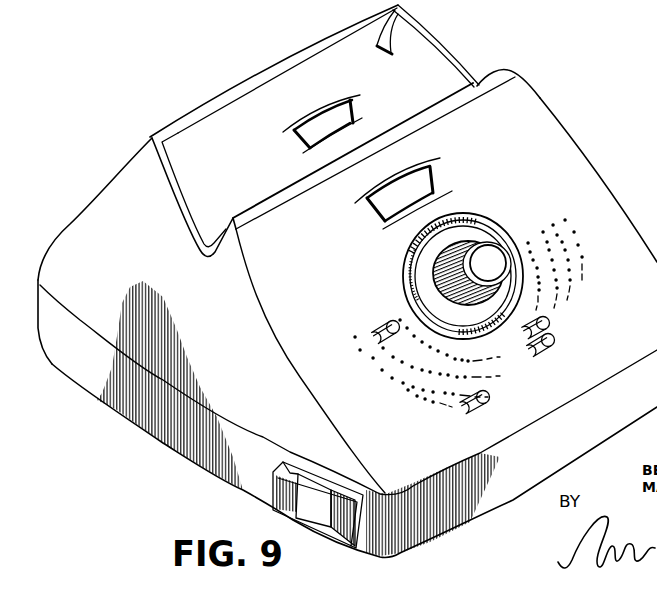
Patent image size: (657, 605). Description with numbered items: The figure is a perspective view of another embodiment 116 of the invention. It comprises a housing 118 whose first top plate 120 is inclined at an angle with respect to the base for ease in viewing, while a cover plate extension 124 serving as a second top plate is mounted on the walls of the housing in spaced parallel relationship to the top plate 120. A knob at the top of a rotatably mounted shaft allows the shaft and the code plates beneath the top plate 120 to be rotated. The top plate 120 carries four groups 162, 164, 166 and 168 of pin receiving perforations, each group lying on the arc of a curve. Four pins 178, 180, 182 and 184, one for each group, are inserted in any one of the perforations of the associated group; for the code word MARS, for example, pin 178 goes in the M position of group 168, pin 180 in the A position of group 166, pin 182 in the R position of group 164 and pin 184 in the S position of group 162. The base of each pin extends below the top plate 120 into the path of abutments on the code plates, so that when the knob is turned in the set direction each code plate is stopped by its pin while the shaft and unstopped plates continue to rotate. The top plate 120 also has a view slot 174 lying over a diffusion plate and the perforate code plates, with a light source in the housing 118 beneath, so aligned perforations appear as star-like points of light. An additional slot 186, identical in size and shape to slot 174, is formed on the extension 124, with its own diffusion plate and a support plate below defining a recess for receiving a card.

The embodiment 116 is at (585, 112).
The housing 118 is at (603, 180).
The first top plate 120 is at (338, 286).
The extension 124 is at (418, 89).
The group of pin receiving perforations 162 is at (400, 316).
The group of pin receiving perforations 164 is at (543, 233).
The group of pin receiving perforations 166 is at (373, 328).
The group of pin receiving perforations 168 is at (566, 221).
The view slot 174 is at (410, 180).
The pin 178 is at (463, 414).
The pin 180 is at (378, 346).
The pin 182 is at (530, 353).
The pin 184 is at (553, 328).
The additional slot 186 is at (317, 123).